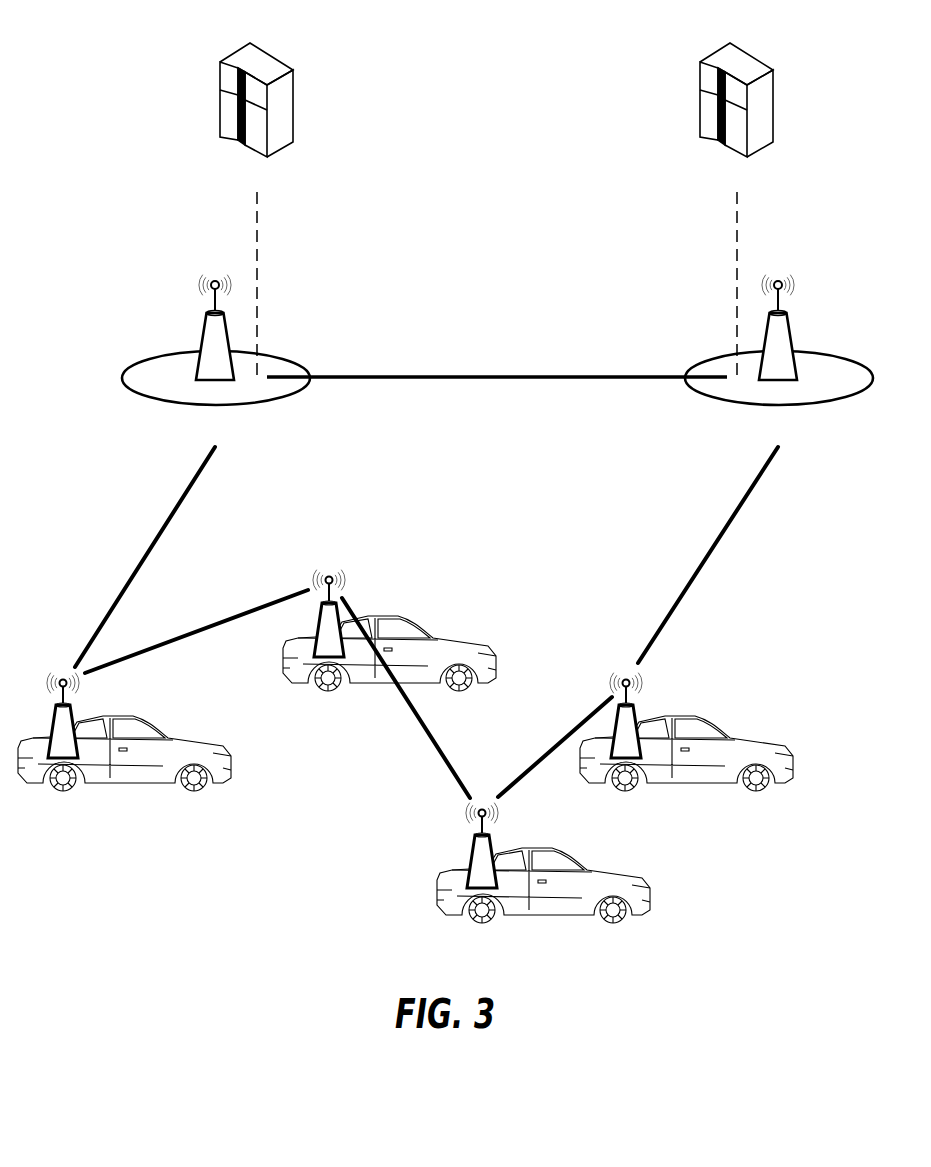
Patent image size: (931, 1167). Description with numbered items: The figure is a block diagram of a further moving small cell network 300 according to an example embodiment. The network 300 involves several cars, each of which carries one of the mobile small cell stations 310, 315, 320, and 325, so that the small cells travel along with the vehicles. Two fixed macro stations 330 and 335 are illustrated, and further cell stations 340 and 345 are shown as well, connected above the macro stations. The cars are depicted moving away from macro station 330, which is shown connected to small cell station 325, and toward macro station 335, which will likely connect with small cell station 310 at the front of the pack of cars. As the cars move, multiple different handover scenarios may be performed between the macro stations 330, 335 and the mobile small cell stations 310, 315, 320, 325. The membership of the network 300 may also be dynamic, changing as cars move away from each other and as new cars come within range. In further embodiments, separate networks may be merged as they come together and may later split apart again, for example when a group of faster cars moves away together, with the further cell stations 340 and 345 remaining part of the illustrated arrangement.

The moving small cell network 300 is at (108, 33).
The mobile small cell station 310 is at (722, 733).
The mobile small cell station 315 is at (572, 861).
The mobile small cell station 320 is at (425, 633).
The mobile small cell station 325 is at (158, 733).
The fixed macro station 330 is at (205, 332).
The fixed macro station 335 is at (792, 339).
The further cell station 340 is at (220, 90).
The further cell station 345 is at (700, 90).